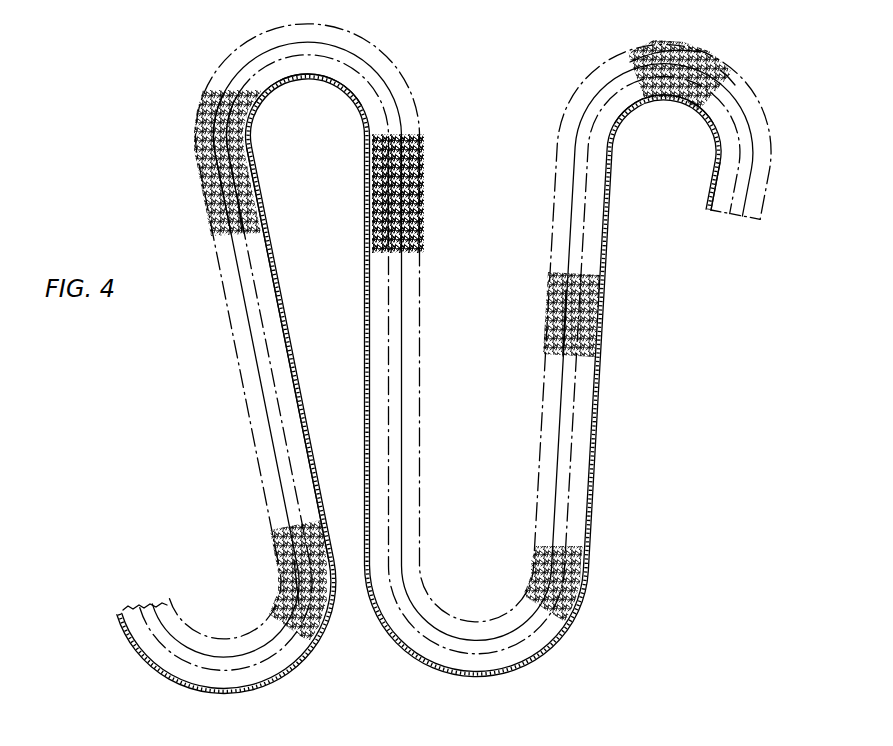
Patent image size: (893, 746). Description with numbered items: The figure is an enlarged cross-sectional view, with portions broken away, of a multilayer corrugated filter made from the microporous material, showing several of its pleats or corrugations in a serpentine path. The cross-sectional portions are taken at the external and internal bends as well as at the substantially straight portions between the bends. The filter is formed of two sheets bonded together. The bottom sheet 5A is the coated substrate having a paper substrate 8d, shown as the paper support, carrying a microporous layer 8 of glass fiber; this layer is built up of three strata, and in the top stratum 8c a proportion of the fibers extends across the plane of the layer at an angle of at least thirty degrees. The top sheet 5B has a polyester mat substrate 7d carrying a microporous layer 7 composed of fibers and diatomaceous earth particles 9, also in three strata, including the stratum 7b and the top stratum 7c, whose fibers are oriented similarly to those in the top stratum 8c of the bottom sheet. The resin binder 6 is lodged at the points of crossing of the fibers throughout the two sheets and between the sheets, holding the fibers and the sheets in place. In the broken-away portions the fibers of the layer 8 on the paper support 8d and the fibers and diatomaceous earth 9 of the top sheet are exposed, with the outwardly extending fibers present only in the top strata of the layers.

The bottom sheet 5A is at (381, 266).
The top sheet 5B is at (428, 161).
The resin binder 6 is at (415, 210).
The microporous layer 7 is at (227, 76).
The stratum 7b is at (225, 190).
The top stratum 7c is at (217, 180).
The polyester mat substrate 7d is at (234, 206).
The microporous layer 8 is at (306, 510).
The top stratum 8c is at (242, 162).
The paper substrate 8d is at (278, 268).
The diatomaceous earth particles 9 is at (410, 238).